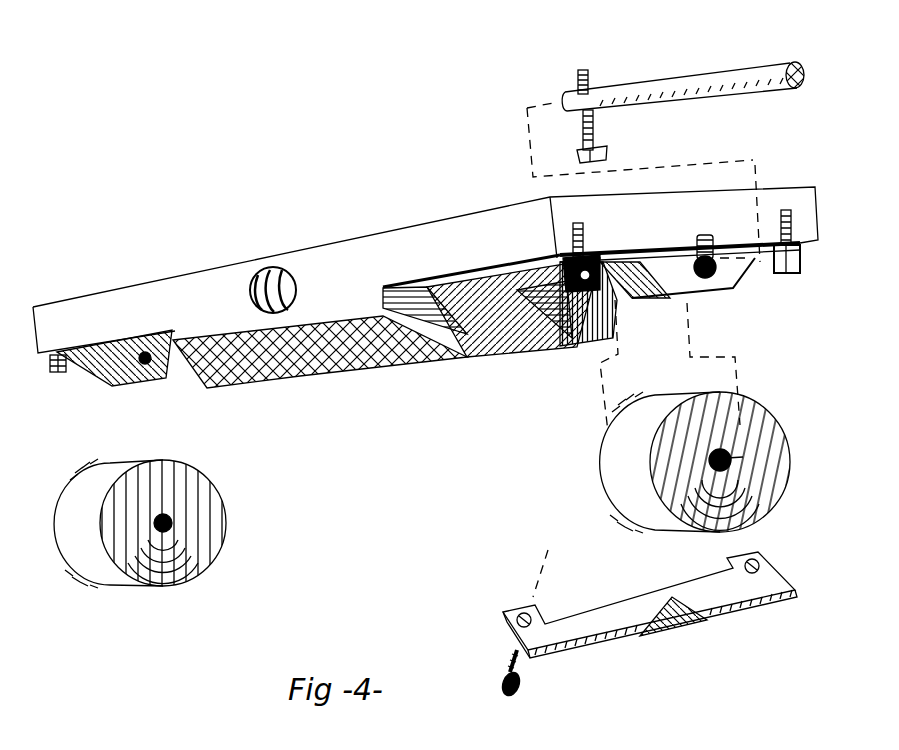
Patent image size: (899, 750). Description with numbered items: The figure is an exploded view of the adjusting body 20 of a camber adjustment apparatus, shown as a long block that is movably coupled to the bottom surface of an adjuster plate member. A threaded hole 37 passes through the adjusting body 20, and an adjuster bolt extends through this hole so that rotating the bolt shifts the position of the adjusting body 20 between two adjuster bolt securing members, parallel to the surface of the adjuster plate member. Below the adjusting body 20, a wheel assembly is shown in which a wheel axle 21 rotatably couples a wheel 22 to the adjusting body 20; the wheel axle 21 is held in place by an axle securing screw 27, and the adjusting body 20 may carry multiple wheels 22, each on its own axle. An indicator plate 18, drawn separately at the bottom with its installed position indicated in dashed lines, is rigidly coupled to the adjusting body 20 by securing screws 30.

The indicator plate 18 is at (775, 585).
The adjusting body 20 is at (188, 298).
The wheel axle 21 is at (693, 82).
The wheel 22 is at (196, 500).
The axle securing screw 27 is at (590, 132).
The securing screws 30 is at (800, 258).
The threaded hole 37 is at (265, 268).